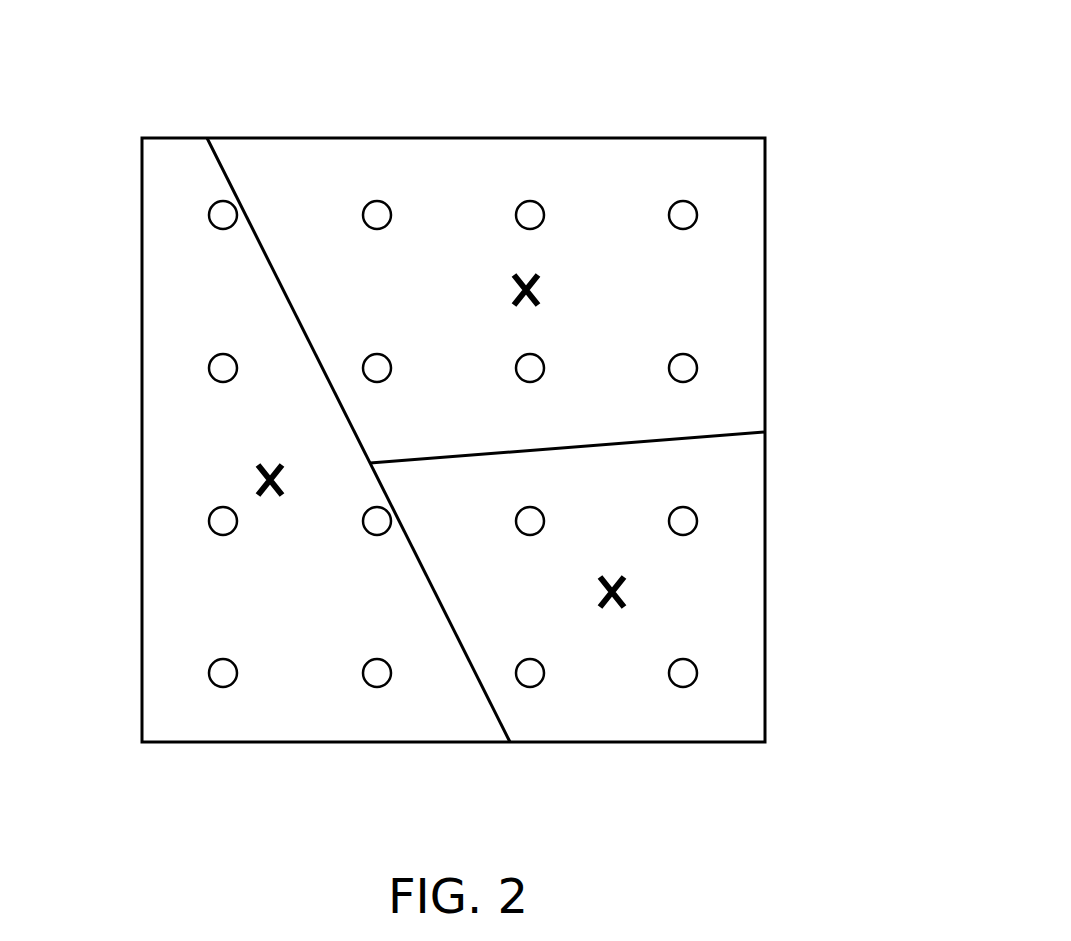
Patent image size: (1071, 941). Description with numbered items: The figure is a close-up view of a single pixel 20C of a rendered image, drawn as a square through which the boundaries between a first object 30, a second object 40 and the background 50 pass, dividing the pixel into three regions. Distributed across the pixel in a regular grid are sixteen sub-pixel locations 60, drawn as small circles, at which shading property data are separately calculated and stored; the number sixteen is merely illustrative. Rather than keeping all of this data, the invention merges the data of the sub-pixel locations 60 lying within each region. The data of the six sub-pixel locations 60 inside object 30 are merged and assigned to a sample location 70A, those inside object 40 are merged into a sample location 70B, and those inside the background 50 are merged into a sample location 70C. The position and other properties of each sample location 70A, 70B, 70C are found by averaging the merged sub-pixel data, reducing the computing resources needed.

The pixel 20C is at (635, 100).
The object 30 is at (186, 600).
The object 40 is at (441, 250).
The background 50 is at (638, 696).
The sub-pixel locations 60 is at (209, 215).
The sample location 70A is at (256, 476).
The sample location 70B is at (542, 286).
The sample location 70C is at (628, 588).